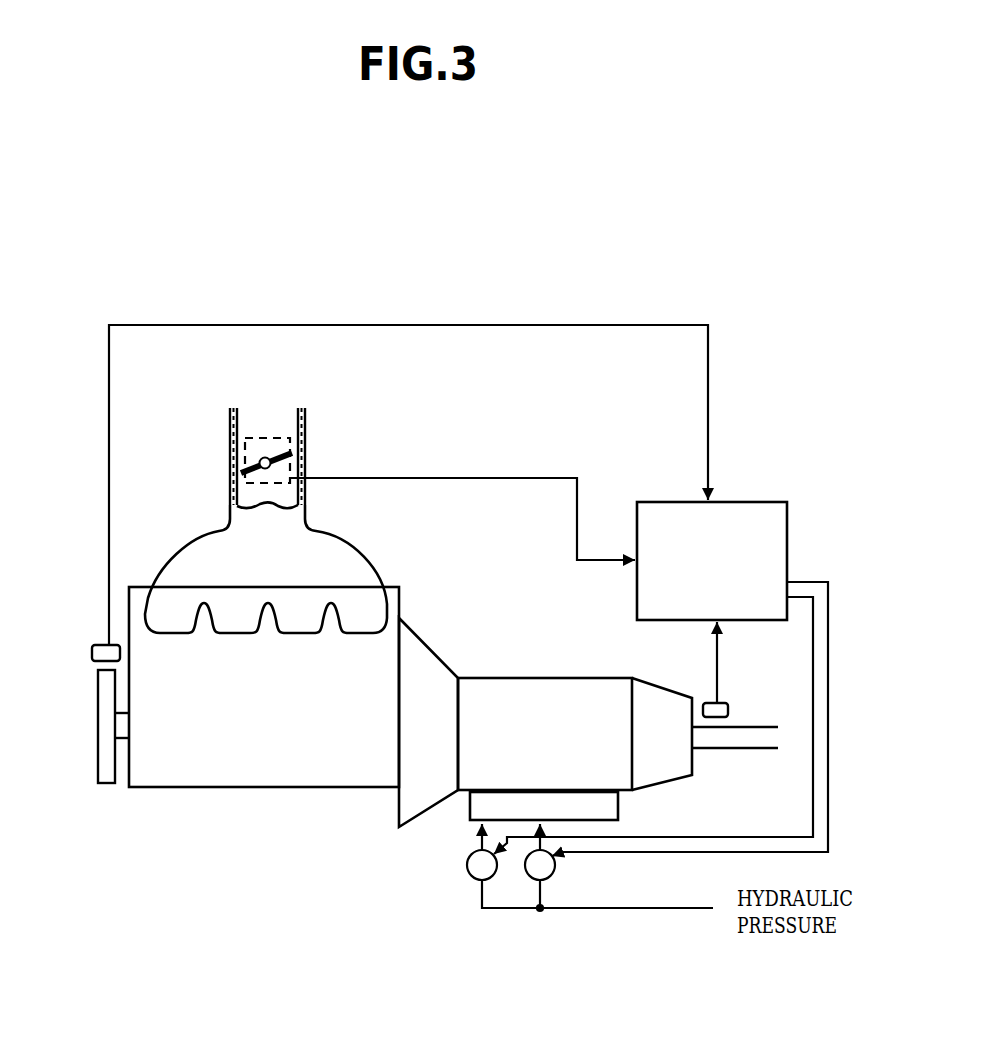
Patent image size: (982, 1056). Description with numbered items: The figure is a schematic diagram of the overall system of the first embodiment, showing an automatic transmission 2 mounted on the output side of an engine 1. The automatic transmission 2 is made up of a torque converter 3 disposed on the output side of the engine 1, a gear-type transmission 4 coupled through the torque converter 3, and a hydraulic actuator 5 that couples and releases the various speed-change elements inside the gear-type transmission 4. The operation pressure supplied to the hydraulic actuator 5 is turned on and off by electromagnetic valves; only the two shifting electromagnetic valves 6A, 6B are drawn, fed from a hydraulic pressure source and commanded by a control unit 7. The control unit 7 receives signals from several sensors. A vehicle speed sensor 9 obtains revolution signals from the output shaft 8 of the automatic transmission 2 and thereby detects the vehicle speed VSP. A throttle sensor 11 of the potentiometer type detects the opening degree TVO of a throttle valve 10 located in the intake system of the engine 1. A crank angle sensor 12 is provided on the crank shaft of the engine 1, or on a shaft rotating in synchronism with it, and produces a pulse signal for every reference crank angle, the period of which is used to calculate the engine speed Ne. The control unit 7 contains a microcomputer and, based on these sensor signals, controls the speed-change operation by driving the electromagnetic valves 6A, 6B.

The engine 1 is at (381, 586).
The automatic transmission 2 is at (545, 711).
The torque converter 3 is at (432, 733).
The gear-type transmission 4 is at (556, 751).
The hydraulic actuator 5 is at (620, 807).
The electromagnetic valve 6A is at (474, 878).
The electromagnetic valve 6B is at (553, 874).
The control unit 7 is at (763, 502).
The output shaft 8 is at (745, 750).
The vehicle speed sensor 9 is at (706, 703).
The throttle valve 10 is at (256, 462).
The throttle sensor 11 is at (283, 439).
The crank angle sensor 12 is at (97, 644).